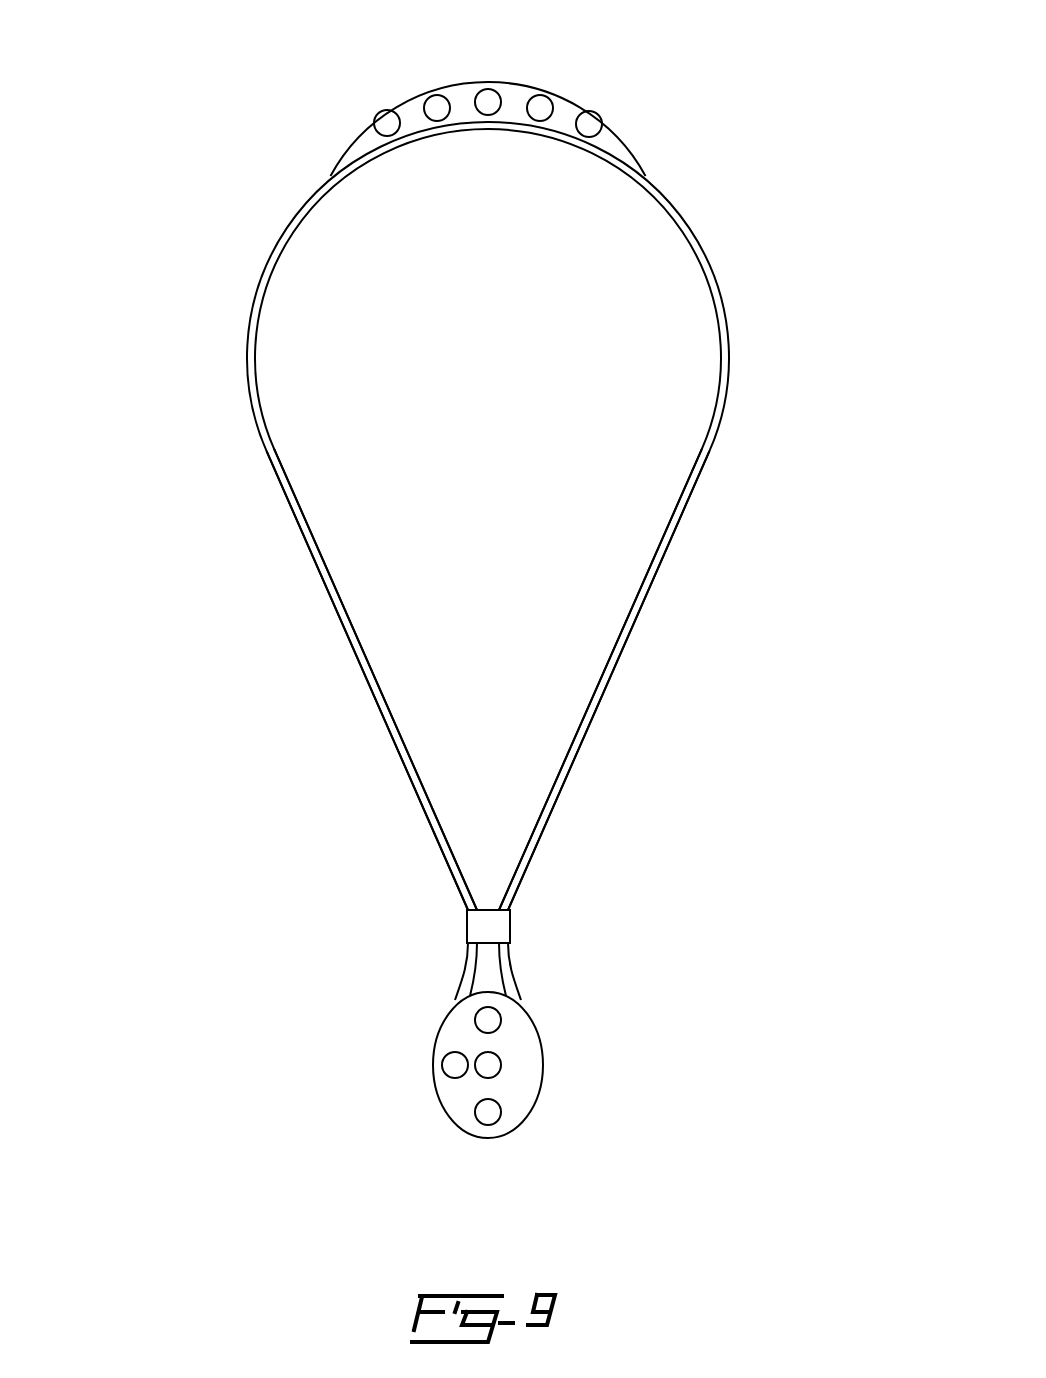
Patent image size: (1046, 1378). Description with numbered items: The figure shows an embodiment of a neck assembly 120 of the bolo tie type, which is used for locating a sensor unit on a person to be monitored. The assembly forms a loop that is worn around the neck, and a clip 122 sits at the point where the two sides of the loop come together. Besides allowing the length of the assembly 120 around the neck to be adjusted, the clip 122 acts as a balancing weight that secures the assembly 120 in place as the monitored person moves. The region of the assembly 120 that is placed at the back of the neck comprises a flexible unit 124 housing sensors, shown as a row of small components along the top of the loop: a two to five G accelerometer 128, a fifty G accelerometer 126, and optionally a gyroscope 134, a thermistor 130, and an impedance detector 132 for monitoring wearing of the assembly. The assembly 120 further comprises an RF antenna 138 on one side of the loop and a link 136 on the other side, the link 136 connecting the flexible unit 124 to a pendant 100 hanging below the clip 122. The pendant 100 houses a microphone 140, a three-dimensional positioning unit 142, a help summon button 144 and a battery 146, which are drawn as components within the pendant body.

The pendant 100 is at (395, 1083).
The neck assembly 120 is at (200, 242).
The clip 122 is at (545, 927).
The flexible unit 124 is at (678, 142).
The 50 G accelerometer 126 is at (440, 96).
The 2-5 G accelerometer 128 is at (490, 92).
The thermistor 130 is at (541, 97).
The impedance detector 132 is at (389, 111).
The gyroscope 134 is at (599, 116).
The link 136 is at (275, 512).
The RF antenna 138 is at (705, 505).
The microphone 140 is at (493, 1117).
The 3D positioning unit 142 is at (492, 1016).
The help summon button 144 is at (483, 1070).
The battery 146 is at (458, 1062).